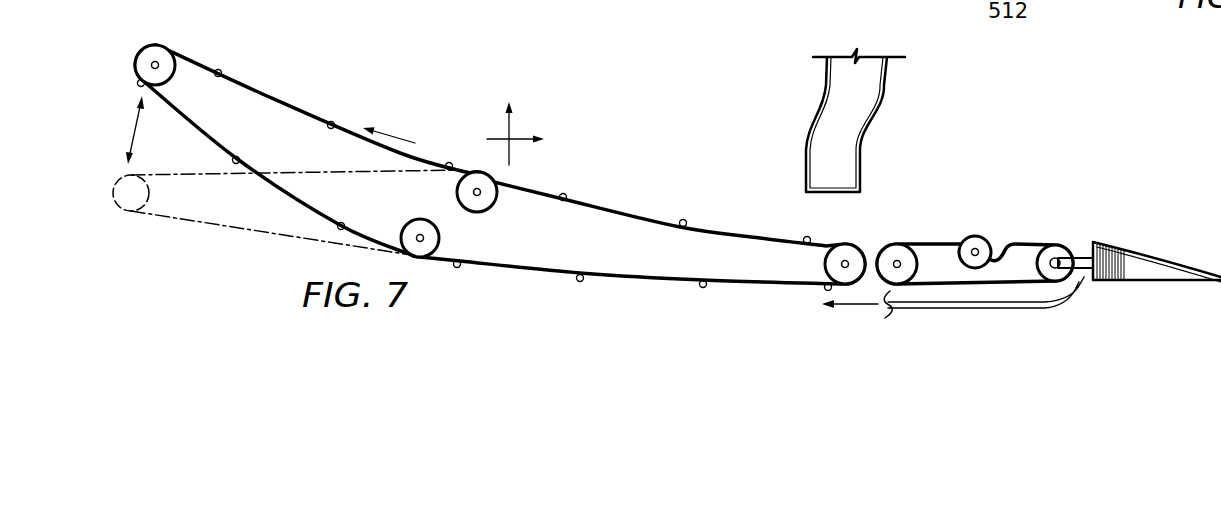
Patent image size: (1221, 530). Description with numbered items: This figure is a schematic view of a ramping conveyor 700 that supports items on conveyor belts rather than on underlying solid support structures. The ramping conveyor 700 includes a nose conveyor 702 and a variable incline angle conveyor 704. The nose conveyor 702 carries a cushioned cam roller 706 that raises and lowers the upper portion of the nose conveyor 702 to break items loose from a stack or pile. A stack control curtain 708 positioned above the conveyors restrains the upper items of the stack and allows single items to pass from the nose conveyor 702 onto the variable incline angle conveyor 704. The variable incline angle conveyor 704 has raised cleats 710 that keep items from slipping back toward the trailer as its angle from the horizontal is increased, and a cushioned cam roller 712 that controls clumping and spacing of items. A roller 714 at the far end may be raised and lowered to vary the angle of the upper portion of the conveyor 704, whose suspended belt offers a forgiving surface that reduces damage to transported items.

The ramping conveyor 700 is at (622, 147).
The nose conveyor 702 is at (937, 241).
The variable incline angle conveyor 704 is at (737, 233).
The cushioned cam roller 706 is at (998, 257).
The stack control curtain 708 is at (822, 92).
The raised cleats 710 is at (333, 126).
The cushioned cam roller 712 is at (458, 186).
The roller 714 is at (177, 70).